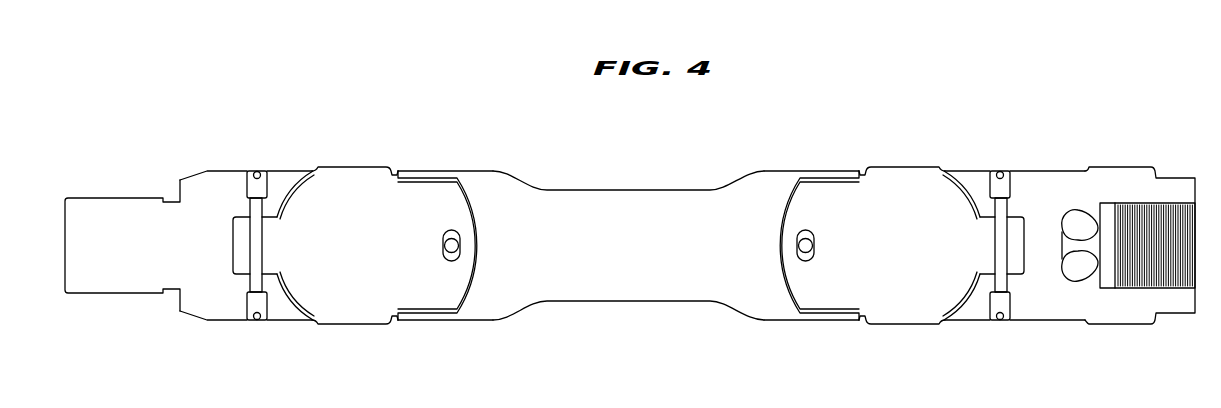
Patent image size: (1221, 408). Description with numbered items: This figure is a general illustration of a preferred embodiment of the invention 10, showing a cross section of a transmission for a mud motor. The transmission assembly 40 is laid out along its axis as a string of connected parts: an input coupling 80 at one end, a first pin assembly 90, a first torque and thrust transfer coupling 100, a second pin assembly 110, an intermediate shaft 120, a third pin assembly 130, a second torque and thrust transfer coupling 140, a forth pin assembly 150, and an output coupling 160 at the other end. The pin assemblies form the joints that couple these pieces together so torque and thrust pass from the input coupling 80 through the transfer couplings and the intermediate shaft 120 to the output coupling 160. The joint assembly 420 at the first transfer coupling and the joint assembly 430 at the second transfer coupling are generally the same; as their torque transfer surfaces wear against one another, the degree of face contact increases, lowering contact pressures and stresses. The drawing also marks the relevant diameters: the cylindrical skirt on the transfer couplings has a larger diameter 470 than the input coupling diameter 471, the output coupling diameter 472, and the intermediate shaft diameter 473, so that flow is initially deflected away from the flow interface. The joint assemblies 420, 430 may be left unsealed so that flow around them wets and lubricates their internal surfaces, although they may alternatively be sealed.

The invention 10 is at (1113, 87).
The transmission assembly 40 is at (471, 314).
The input coupling 80 is at (120, 196).
The first pin assembly 90 is at (254, 168).
The first torque and thrust transfer coupling 100 is at (353, 165).
The second pin assembly 110 is at (443, 245).
The intermediate shaft 120 is at (613, 194).
The third pin assembly 130 is at (814, 245).
The second torque and thrust transfer coupling 140 is at (898, 165).
The forth pin assembly 150 is at (998, 168).
The output coupling 160 is at (1127, 165).
The joint assembly 420 is at (286, 313).
The joint assembly 430 is at (970, 313).
The diameter 470 is at (343, 324).
The input coupling diameter 471 is at (222, 320).
The output coupling diameter 472 is at (1044, 320).
The intermediate shaft diameter 473 is at (774, 320).